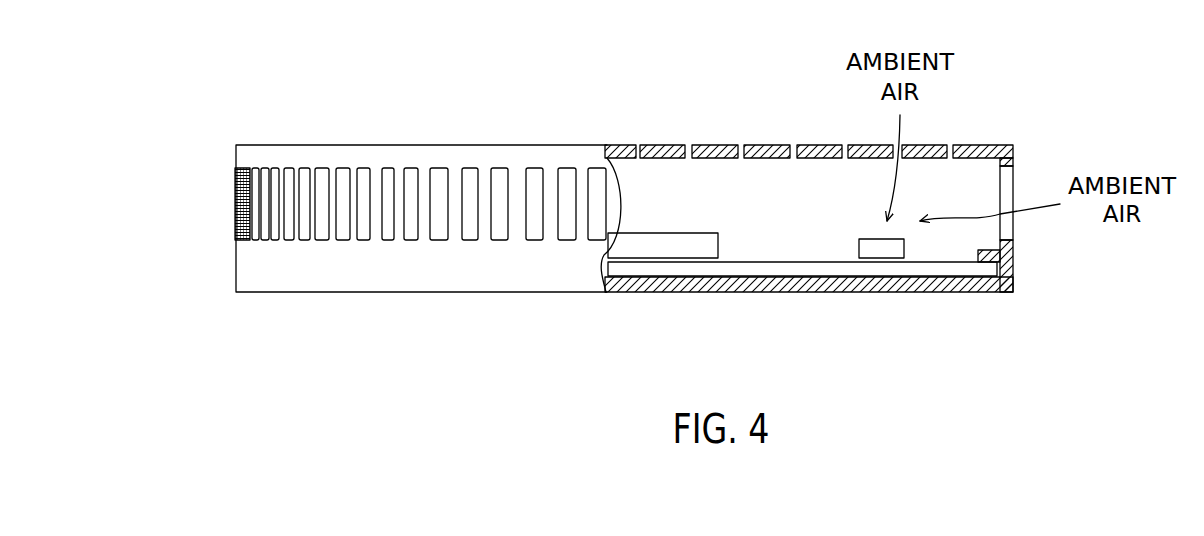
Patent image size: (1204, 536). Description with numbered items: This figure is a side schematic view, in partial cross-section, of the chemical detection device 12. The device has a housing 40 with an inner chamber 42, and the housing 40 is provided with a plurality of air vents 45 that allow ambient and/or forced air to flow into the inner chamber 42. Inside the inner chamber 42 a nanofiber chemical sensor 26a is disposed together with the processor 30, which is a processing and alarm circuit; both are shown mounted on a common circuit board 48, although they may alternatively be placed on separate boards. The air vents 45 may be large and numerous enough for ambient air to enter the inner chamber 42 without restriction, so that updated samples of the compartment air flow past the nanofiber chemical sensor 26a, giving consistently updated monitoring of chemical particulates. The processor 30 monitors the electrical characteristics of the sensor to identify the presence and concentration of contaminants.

The detection device 12 is at (634, 65).
The nanofiber chemical sensor 26a is at (858, 245).
The processor 30 is at (694, 240).
The housing 40 is at (247, 266).
The inner chamber 42 is at (645, 200).
The air vents 45 is at (343, 172).
The circuit board 48 is at (670, 272).